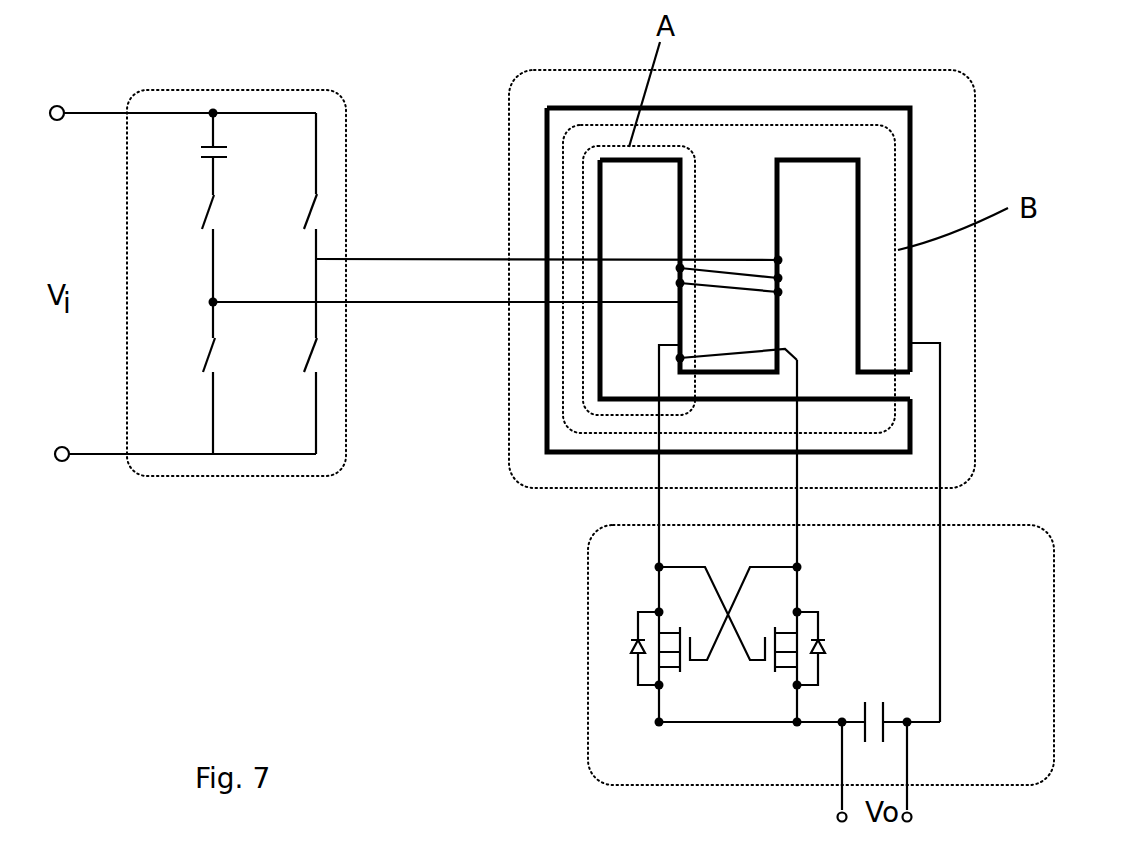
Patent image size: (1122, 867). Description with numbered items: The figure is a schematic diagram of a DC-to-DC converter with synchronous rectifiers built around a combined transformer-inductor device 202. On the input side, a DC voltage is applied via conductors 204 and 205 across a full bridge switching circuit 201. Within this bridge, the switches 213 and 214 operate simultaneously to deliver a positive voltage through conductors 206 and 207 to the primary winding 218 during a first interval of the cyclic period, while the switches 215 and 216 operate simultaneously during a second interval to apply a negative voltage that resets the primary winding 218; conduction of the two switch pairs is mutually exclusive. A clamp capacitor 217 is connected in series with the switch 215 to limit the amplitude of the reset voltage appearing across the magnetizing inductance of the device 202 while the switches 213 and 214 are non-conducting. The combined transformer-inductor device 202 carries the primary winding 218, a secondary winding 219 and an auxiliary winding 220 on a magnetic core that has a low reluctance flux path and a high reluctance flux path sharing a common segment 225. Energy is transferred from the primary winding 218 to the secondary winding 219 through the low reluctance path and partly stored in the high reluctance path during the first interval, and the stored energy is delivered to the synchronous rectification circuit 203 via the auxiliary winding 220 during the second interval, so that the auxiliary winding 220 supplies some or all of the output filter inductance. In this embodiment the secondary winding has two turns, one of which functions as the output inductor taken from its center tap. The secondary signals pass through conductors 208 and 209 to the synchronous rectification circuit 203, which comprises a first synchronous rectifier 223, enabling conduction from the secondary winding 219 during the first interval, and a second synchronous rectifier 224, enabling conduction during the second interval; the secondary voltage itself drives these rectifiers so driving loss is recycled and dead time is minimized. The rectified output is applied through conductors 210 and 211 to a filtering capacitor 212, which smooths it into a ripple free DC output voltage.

The full bridge switching circuit 201 is at (253, 100).
The combined transformer-inductor device 202 is at (831, 88).
The synchronous rectification circuit 203 is at (1022, 723).
The conductor 204 is at (93, 113).
The conductor 205 is at (93, 455).
The conductor 206 is at (428, 259).
The conductor 207 is at (430, 304).
The conductor 208 is at (798, 538).
The conductor 209 is at (658, 538).
The conductor 210 is at (942, 657).
The conductor 211 is at (820, 728).
The filtering capacitor 212 is at (897, 706).
The switch 213 is at (287, 213).
The switch 214 is at (186, 358).
The switch 215 is at (184, 214).
The switch 216 is at (288, 358).
The clamp capacitor 217 is at (188, 142).
The primary winding 218 is at (706, 280).
The secondary winding 219 is at (790, 352).
The auxiliary winding 220 is at (930, 342).
The first synchronous rectifier 223 is at (692, 650).
The second synchronous rectifier 224 is at (765, 650).
The common segment 225 is at (577, 200).